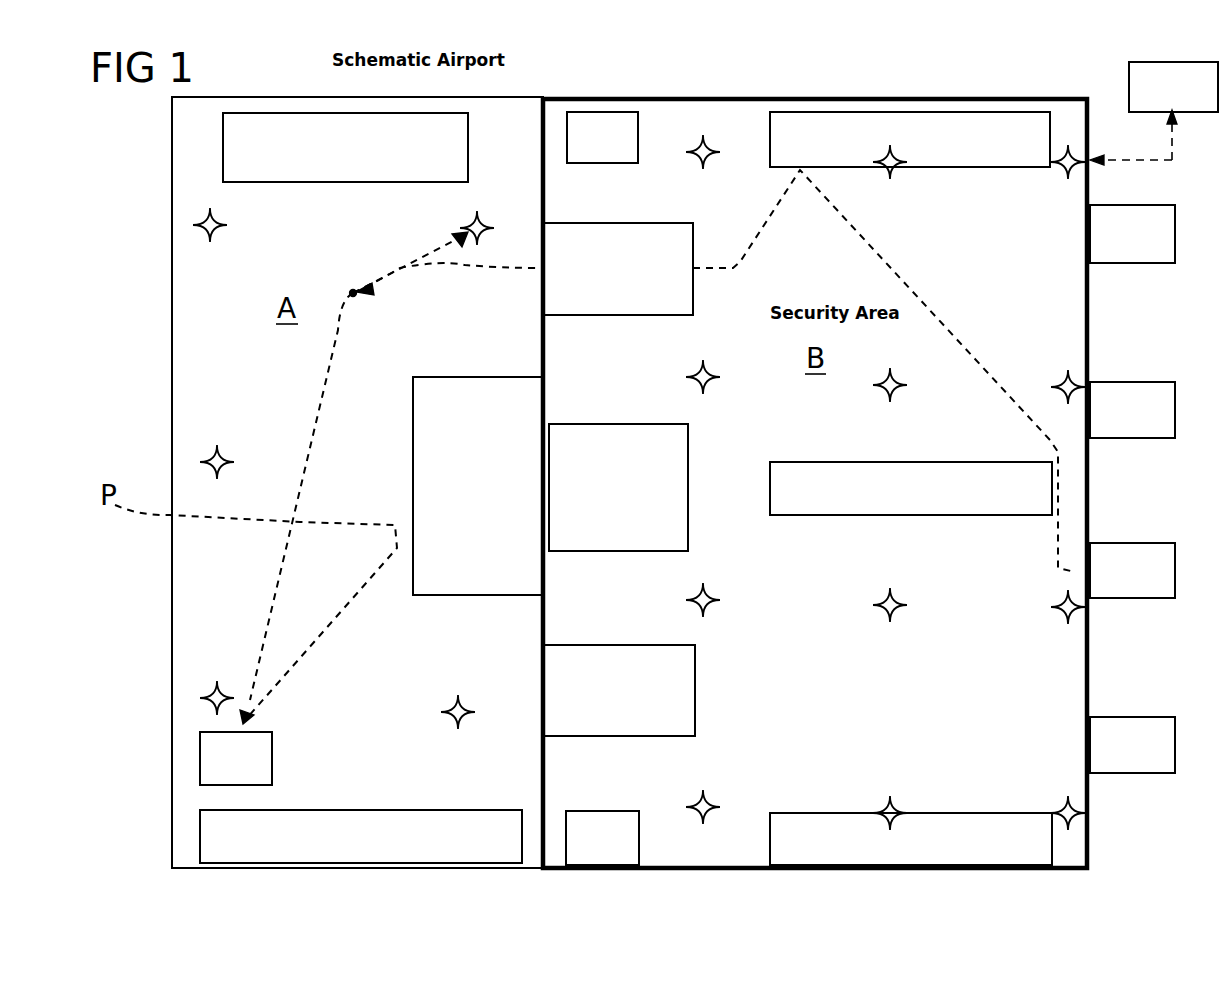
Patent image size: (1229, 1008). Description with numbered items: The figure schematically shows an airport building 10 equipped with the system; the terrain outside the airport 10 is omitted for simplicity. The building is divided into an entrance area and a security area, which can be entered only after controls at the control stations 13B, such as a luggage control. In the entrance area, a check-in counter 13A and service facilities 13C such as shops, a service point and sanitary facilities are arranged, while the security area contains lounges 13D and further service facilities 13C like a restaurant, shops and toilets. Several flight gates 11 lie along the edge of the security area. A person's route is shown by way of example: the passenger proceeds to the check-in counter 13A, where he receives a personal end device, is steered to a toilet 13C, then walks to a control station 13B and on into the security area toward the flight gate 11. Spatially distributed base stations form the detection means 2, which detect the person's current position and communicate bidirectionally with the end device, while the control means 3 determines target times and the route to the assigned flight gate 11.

The airport building 10 is at (158, 323).
The detection means 2 is at (222, 229).
The control means 3 is at (1183, 105).
The flight gate 11 is at (1166, 222).
The check-in counter 13A is at (458, 392).
The control station 13B is at (680, 302).
The service facilities 13C is at (452, 162).
The lounges 13D is at (672, 460).